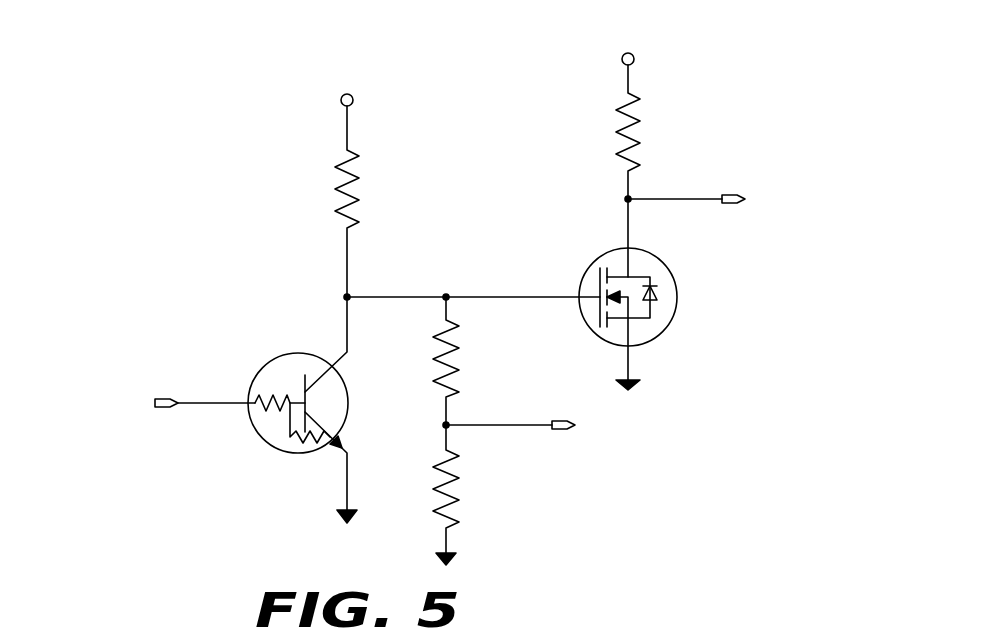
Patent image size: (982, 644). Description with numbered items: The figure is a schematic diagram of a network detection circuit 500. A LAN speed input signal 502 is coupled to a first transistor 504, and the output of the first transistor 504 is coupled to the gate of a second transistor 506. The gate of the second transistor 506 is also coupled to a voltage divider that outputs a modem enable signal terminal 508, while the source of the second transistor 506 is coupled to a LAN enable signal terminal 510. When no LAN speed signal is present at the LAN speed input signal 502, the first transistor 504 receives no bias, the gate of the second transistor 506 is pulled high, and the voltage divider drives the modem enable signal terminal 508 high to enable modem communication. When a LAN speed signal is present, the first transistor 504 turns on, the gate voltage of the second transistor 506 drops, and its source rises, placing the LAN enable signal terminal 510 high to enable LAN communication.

The network detection circuit 500 is at (116, 52).
The LAN speed input signal 502 is at (194, 398).
The first transistor 504 is at (345, 387).
The second transistor 506 is at (700, 279).
The modem enable signal terminal 508 is at (504, 424).
The LAN enable signal terminal 510 is at (672, 198).